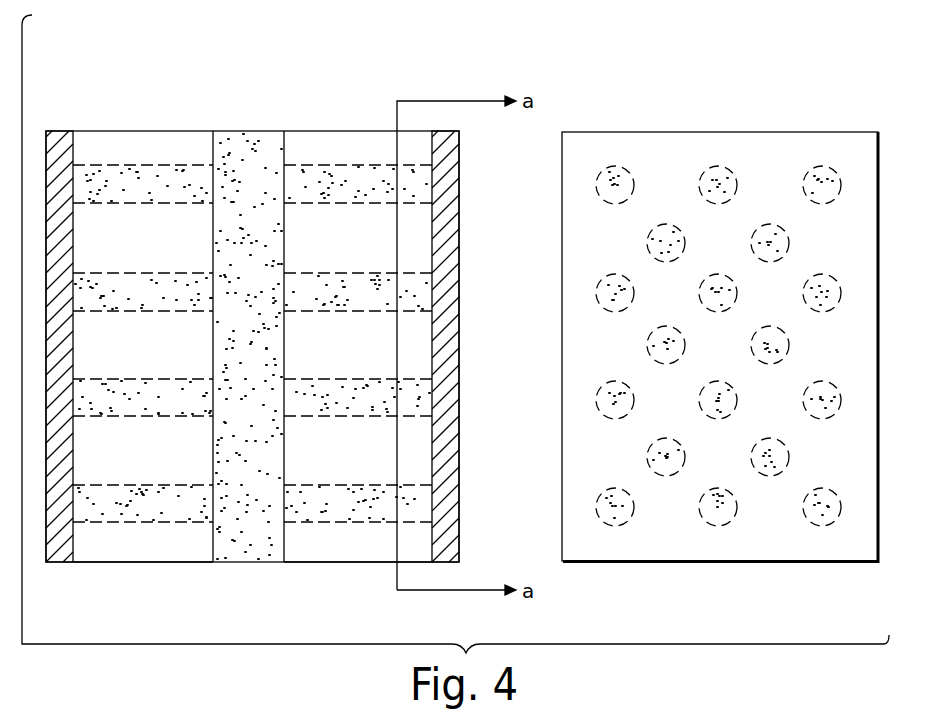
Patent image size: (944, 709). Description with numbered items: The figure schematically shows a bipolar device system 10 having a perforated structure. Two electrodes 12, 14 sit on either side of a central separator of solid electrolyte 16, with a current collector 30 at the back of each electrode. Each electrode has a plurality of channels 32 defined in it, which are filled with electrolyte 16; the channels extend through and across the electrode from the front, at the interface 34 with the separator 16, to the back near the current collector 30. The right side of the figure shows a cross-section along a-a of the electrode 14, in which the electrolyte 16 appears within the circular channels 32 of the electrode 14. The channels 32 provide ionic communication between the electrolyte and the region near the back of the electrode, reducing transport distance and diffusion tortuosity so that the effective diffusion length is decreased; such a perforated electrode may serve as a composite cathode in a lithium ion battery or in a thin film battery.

The system 10 is at (178, 62).
The electrode 12 is at (124, 563).
The electrode 14 is at (372, 563).
The solid electrolyte 16 is at (343, 486).
The current collector 30 is at (68, 128).
The channels 32 is at (106, 197).
The interface 34 is at (213, 563).